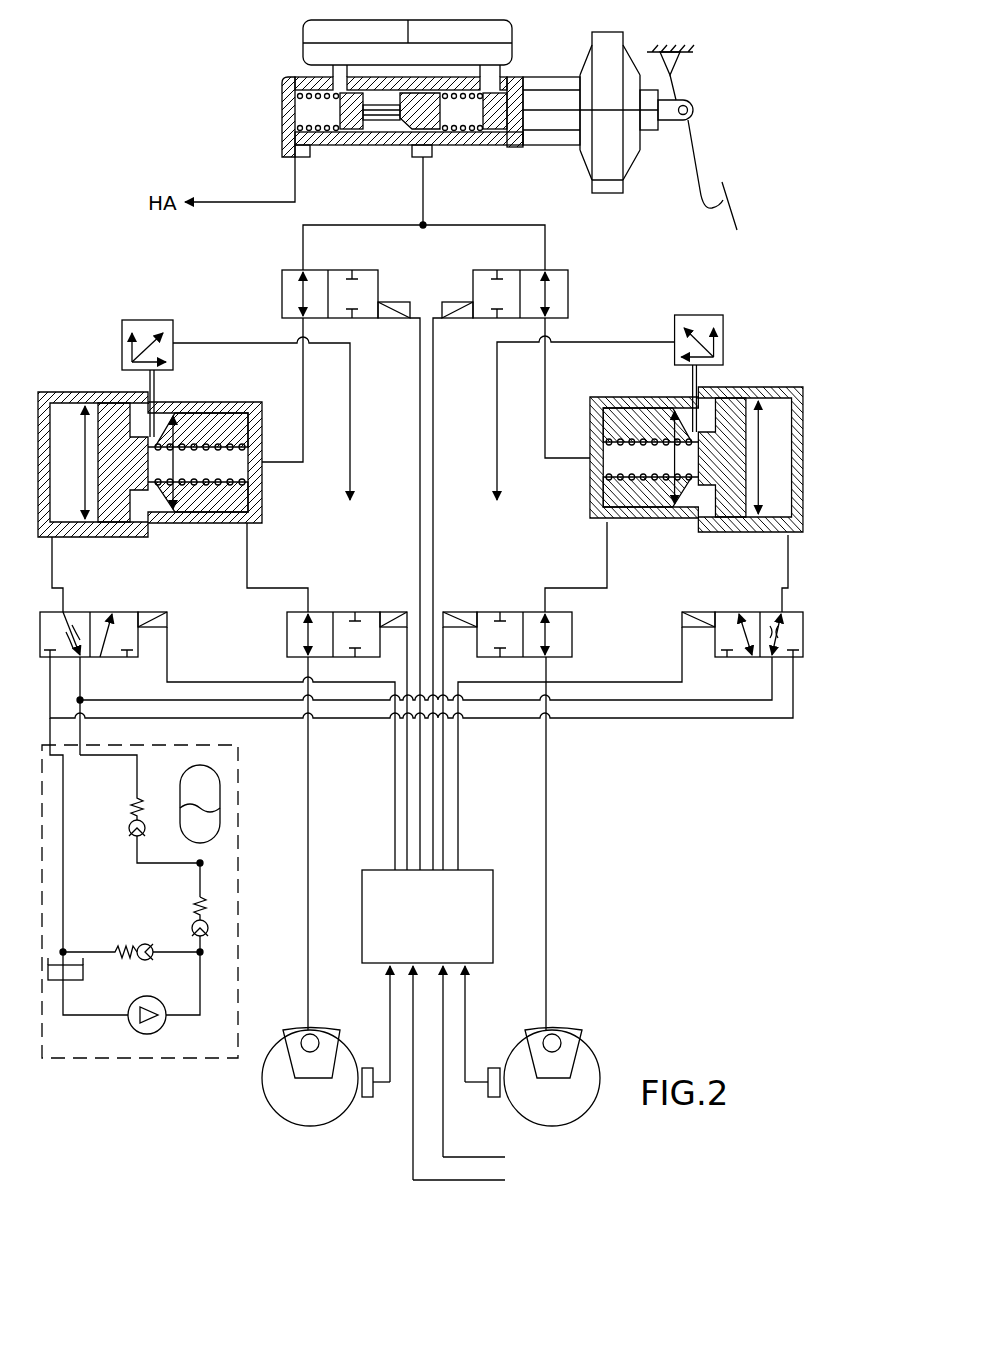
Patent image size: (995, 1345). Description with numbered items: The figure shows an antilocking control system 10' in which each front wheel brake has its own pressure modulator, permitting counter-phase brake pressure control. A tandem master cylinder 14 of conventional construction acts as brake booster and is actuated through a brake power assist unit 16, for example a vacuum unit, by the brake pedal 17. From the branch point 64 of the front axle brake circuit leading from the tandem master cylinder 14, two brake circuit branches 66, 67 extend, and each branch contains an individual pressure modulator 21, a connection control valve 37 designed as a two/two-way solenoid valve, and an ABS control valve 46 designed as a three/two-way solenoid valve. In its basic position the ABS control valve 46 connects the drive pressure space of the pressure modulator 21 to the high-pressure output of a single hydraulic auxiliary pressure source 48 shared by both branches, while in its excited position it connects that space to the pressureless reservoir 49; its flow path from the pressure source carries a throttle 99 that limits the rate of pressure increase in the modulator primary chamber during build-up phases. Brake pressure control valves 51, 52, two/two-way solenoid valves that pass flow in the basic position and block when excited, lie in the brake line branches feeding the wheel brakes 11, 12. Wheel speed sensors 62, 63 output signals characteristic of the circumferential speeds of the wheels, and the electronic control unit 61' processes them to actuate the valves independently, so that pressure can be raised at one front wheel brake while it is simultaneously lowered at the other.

The antilocking control system 10' is at (165, 69).
The tandem master cylinder 14 is at (280, 98).
The brake power assist unit 16 is at (618, 175).
The brake pedal 17 is at (698, 195).
The front axle brake circuit branch 66 is at (343, 225).
The front axle brake circuit branch 67 is at (497, 225).
The branch point 64 is at (425, 227).
The control valve 37 is at (378, 290).
The pressure modulator 21 is at (84, 390).
The electronic control unit 61' is at (424, 758).
The throttle 99 is at (78, 635).
The ABS control valve 46 is at (132, 615).
The brake pressure control valve 51 is at (367, 616).
The brake pressure control valve 52 is at (510, 616).
The hydraulic auxiliary pressure source 48 is at (108, 1048).
The pressureless reservoir 49 is at (75, 972).
The wheel brake 11 is at (292, 1112).
The wheel brake 12 is at (592, 1072).
The wheel speed sensor 62 is at (367, 1068).
The wheel speed sensor 63 is at (494, 1068).